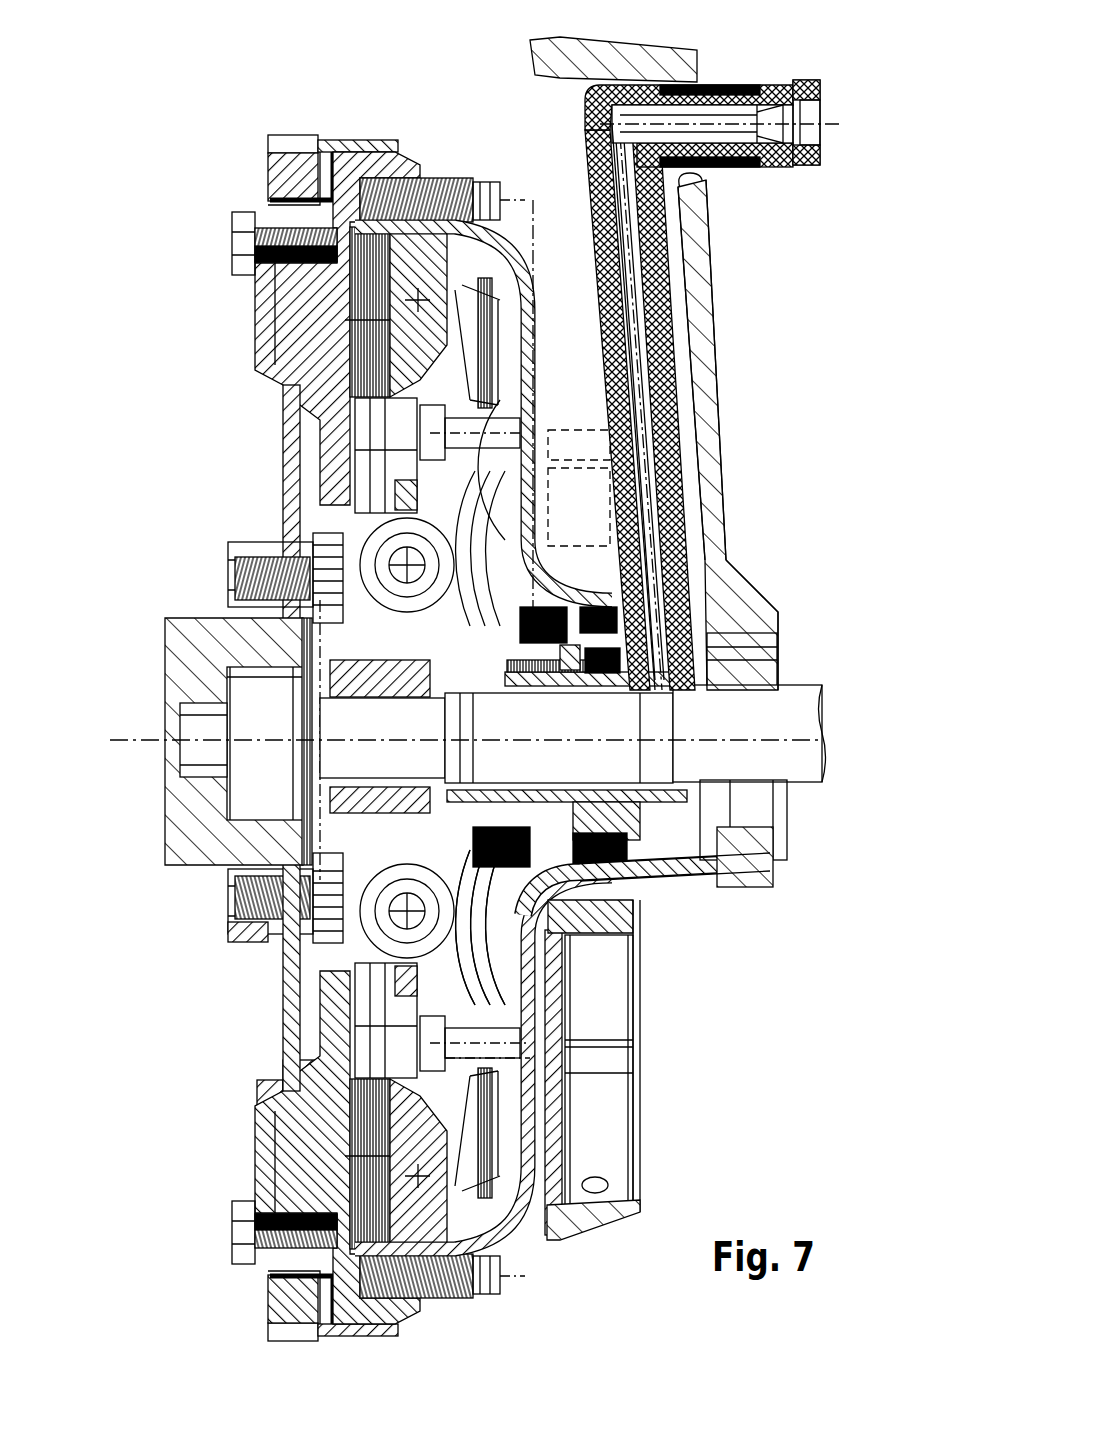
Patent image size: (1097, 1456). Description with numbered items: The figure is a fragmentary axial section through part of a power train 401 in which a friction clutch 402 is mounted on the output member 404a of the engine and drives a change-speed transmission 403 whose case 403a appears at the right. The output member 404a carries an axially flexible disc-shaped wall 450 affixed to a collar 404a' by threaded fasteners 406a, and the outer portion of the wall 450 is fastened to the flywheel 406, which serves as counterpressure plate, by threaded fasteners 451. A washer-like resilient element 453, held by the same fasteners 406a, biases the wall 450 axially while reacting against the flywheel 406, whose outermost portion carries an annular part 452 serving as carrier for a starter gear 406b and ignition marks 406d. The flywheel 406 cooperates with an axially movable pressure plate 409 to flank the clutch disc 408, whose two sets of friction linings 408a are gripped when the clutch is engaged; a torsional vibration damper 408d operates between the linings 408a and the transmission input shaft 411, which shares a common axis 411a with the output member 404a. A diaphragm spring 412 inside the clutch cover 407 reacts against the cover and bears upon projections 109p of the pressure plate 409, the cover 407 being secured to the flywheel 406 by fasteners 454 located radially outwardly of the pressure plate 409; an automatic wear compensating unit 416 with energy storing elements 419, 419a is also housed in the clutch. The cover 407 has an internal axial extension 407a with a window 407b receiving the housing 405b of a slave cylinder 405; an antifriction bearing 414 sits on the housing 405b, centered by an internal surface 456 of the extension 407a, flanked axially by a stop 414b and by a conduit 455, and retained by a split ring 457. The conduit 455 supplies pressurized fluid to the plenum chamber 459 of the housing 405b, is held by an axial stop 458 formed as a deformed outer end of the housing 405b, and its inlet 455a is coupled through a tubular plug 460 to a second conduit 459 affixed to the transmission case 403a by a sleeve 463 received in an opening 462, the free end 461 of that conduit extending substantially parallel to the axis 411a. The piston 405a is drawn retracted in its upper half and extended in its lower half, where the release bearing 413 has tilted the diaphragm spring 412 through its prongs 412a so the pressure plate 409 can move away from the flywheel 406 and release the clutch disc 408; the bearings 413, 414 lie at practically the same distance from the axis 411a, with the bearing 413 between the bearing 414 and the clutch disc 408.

The power train 401 is at (203, 97).
The friction clutch 402 is at (560, 268).
The change-speed transmission 403 is at (718, 395).
The transmission case 403a is at (705, 410).
The output member 404a is at (195, 740).
The collar 404a' is at (199, 946).
The slave cylinder 405 is at (655, 902).
The piston 405a is at (546, 693).
The cylinder or housing 405b is at (745, 820).
The flywheel 406 is at (300, 333).
The threaded fasteners 406a is at (235, 893).
The starter gear 406b is at (268, 172).
The ignition marks 406d is at (366, 142).
The clutch housing or cover 407 is at (555, 1160).
The internal axial extension 407a is at (640, 890).
The window or opening 407b is at (650, 875).
The clutch disc 408 is at (680, 500).
The friction linings 408a is at (290, 380).
The torsional vibration damper 408d is at (330, 522).
The pressure plate 409 is at (470, 1240).
The transmission input shaft 411 is at (772, 728).
The common axis 411a is at (165, 740).
The diaphragm spring 412 is at (512, 330).
The prongs 412a is at (680, 470).
The release bearing 413 is at (680, 548).
The antifriction bearing 414 is at (650, 905).
The stop 414b is at (645, 935).
The automatic wear compensating unit 416 is at (545, 1108).
The energy storing element 419 is at (560, 1035).
The energy storing element 419a is at (560, 1057).
The axially flexible disc-shaped connector or wall 450 is at (310, 477).
The threaded fasteners 451 is at (235, 250).
The annular part 452 is at (268, 203).
The axially resilient element 453 is at (290, 990).
The fasteners 454 is at (486, 180).
The conduit 455 is at (735, 620).
The inlet 455a is at (690, 440).
The internal surface 456 is at (690, 570).
The split ring 457 is at (700, 600).
The axial stop 458 is at (740, 672).
The second conduit 459 is at (573, 805).
The tubular plug 460 is at (660, 360).
The free end 461 is at (812, 140).
The opening 462 is at (633, 78).
The sleeve 463 is at (720, 80).
The projections 109p is at (490, 262).